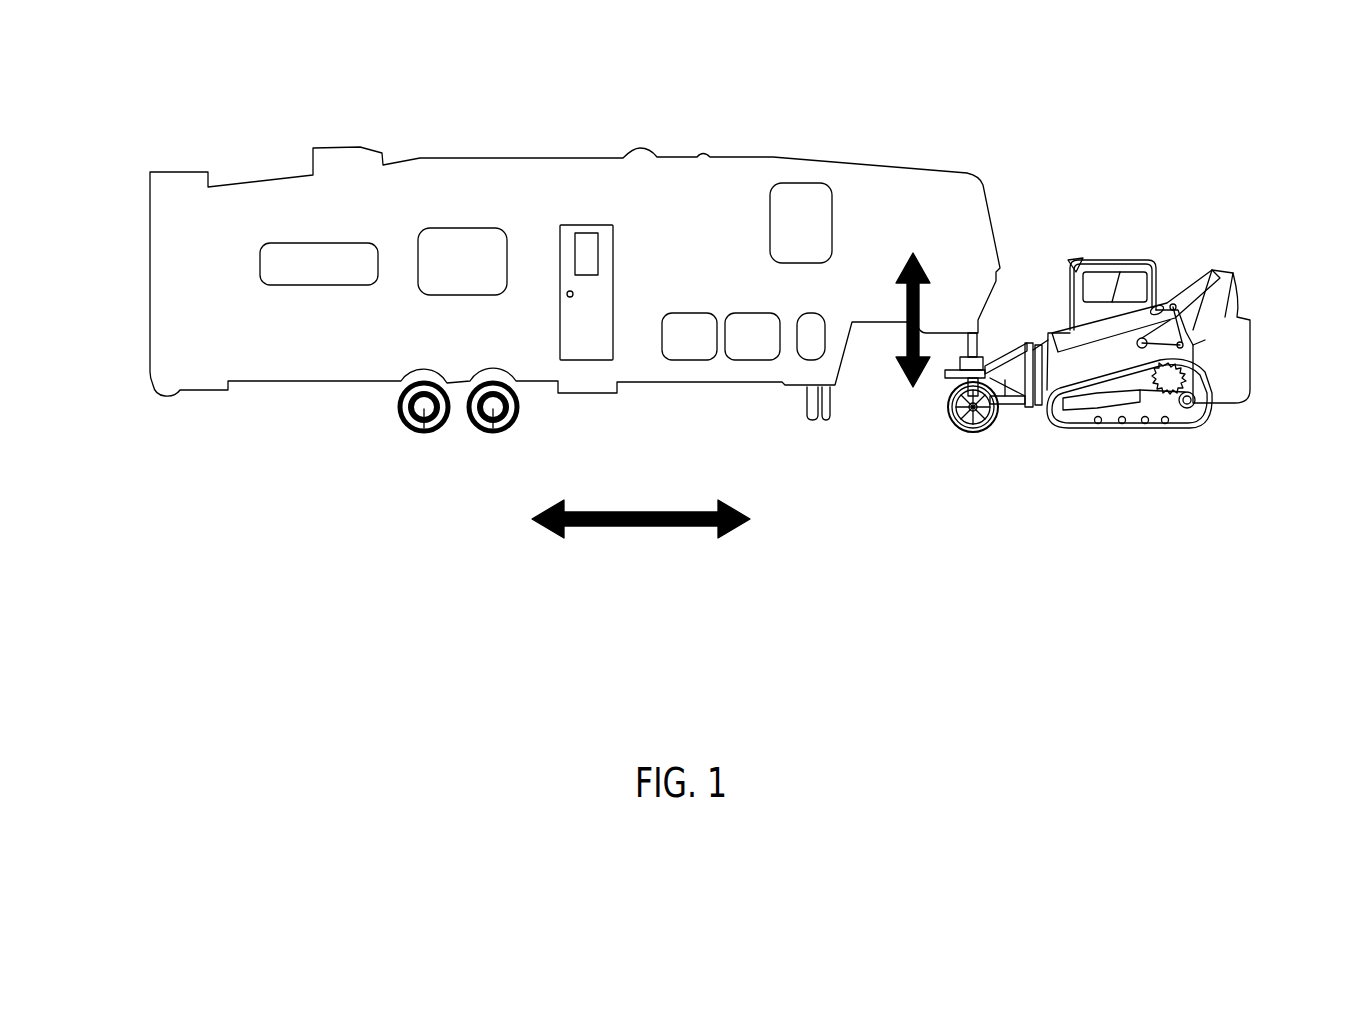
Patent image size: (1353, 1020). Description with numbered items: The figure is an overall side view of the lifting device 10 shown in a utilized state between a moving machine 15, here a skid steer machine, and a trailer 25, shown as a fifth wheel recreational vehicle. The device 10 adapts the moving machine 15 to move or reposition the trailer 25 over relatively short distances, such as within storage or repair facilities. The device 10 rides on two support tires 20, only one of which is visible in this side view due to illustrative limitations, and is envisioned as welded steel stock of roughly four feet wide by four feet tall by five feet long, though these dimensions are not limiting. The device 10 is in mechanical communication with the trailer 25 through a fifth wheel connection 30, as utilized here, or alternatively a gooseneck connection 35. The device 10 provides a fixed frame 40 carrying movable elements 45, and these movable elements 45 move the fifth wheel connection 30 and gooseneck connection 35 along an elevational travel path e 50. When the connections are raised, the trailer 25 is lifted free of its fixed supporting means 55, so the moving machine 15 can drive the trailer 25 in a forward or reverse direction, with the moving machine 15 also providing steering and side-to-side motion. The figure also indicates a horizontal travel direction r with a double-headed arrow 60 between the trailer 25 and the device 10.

The lifting device 10 is at (396, 556).
The moving machine 15 is at (1170, 390).
The support tire 20 is at (957, 412).
The trailer 25 is at (715, 228).
The fifth wheel connection 30 is at (995, 355).
The gooseneck connection 35 is at (945, 372).
The fixed frame 40 is at (1022, 405).
The movable elements 45 is at (1035, 360).
The elevational travel path 50 is at (920, 272).
The fixed supporting means 55 is at (806, 418).
The horizontal travel direction arrow r 60 is at (687, 523).